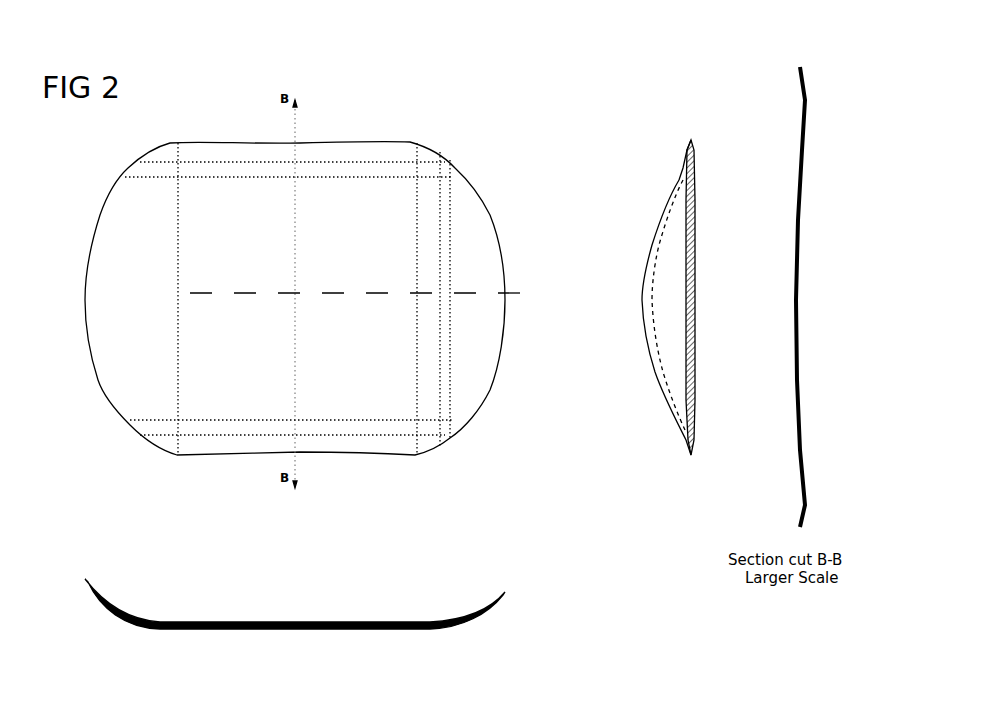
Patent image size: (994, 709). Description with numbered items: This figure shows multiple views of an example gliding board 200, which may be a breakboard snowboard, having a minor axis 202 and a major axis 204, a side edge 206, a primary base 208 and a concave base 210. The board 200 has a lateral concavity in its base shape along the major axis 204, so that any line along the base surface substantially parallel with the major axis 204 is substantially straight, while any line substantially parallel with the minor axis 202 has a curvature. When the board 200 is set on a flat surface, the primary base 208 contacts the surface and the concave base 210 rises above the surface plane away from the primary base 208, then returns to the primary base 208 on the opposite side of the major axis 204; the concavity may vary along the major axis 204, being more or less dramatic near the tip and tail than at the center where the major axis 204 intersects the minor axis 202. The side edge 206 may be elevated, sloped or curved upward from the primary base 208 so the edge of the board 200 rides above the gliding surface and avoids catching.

The board 200 is at (423, 87).
The minor axis 202 is at (298, 135).
The major axis 204 is at (518, 292).
The side edge 206 is at (693, 140).
The primary base 208 is at (698, 172).
The concave base 210 is at (697, 293).